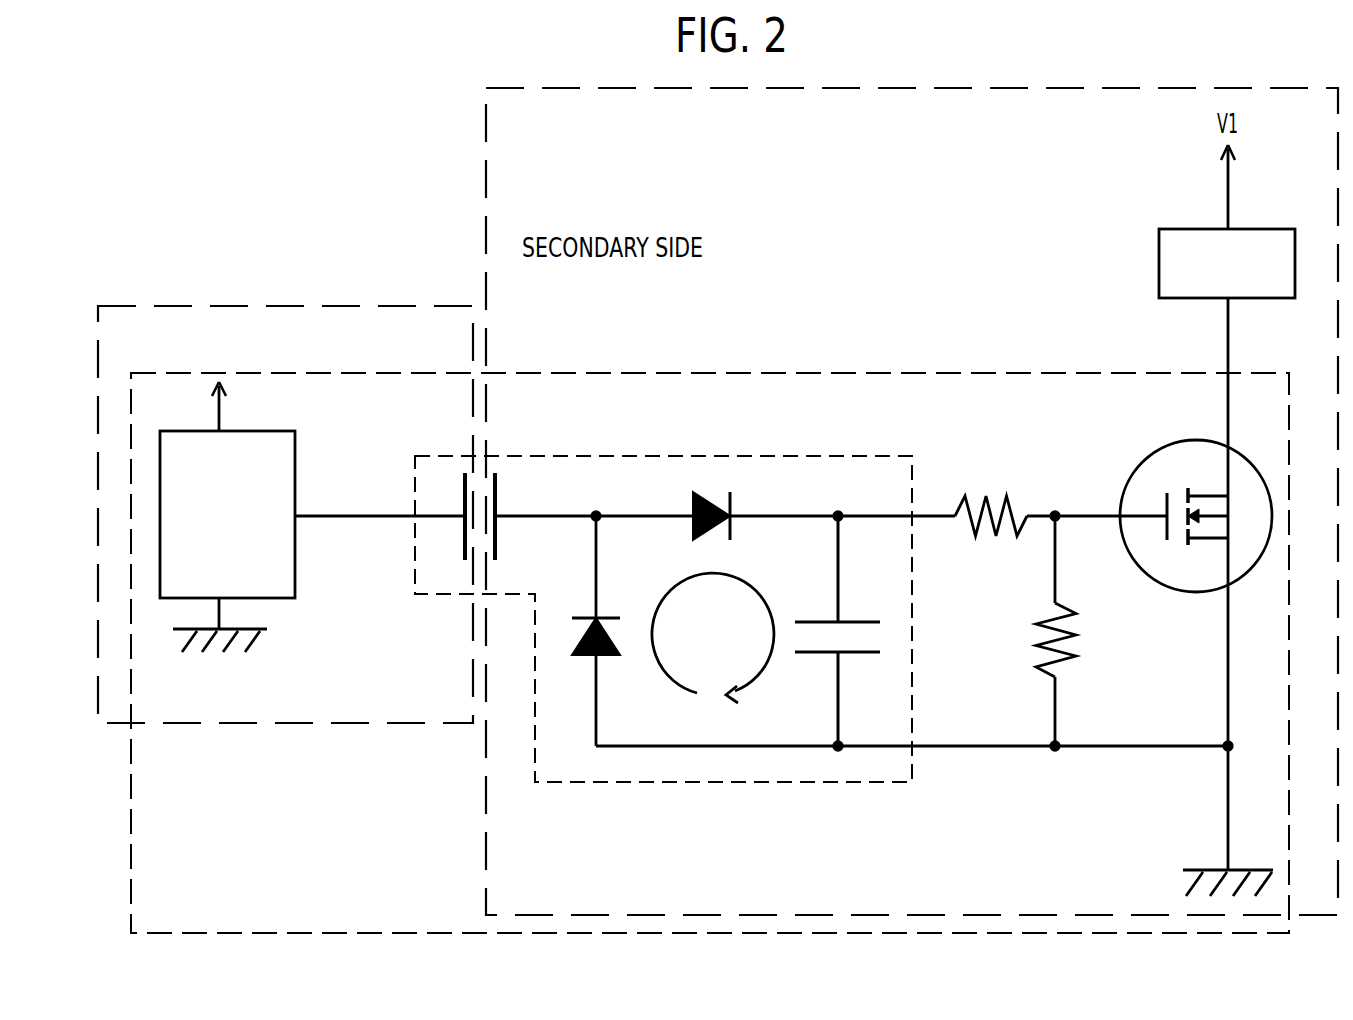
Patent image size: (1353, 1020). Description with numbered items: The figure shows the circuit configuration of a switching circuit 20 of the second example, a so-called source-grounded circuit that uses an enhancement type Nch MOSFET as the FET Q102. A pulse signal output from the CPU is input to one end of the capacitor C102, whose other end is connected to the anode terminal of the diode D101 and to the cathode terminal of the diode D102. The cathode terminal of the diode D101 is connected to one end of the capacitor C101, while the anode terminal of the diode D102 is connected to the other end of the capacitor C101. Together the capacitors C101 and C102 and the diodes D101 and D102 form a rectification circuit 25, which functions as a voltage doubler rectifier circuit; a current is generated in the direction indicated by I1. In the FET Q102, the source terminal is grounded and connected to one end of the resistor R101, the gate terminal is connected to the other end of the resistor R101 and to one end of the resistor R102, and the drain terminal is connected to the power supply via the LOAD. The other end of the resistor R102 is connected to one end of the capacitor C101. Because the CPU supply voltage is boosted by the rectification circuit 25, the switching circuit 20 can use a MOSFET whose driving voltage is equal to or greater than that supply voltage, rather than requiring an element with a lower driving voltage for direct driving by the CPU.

The switching circuit 20 is at (292, 372).
The rectification circuit 25 is at (690, 455).
The element CPU is at (227, 496).
The capacitor C102 is at (510, 516).
The diode D101 is at (686, 505).
The diode D102 is at (581, 631).
The capacitor C101 is at (850, 631).
The resistor R102 is at (991, 493).
The resistor R101 is at (1029, 631).
The FET Q102 is at (1167, 517).
The current I1 is at (735, 577).
The load LOAD is at (1227, 263).